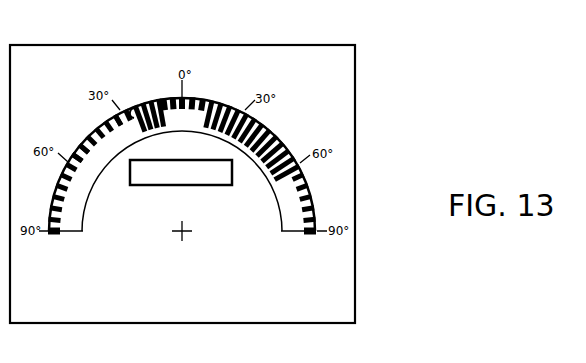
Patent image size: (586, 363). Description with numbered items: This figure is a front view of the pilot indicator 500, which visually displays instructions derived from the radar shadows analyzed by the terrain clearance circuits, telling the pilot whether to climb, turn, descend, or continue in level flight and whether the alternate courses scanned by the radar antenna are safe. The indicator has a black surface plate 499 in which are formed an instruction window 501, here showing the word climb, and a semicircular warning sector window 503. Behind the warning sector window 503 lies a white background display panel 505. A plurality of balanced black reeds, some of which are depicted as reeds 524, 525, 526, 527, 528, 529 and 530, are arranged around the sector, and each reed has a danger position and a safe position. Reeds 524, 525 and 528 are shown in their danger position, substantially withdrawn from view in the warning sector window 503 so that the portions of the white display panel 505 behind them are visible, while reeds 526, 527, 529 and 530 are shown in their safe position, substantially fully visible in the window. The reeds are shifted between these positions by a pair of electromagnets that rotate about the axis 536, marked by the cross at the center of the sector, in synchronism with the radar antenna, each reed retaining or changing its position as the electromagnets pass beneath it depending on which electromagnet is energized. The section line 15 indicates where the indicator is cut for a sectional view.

The section line 15- 15 is at (182, 45).
The black surface plate 499 is at (306, 301).
The pilot indicator 500 is at (357, 313).
The instruction window 501 is at (175, 185).
The warning sector window 503 is at (67, 234).
The white background display panel 505 is at (292, 210).
The reed 524 is at (73, 149).
The reed 525 is at (81, 138).
The reed 526 is at (120, 112).
The reed 527 is at (155, 100).
The reed 528 is at (186, 96).
The reed 529 is at (259, 113).
The reed 530 is at (263, 120).
The axis of rotation 536 is at (180, 235).